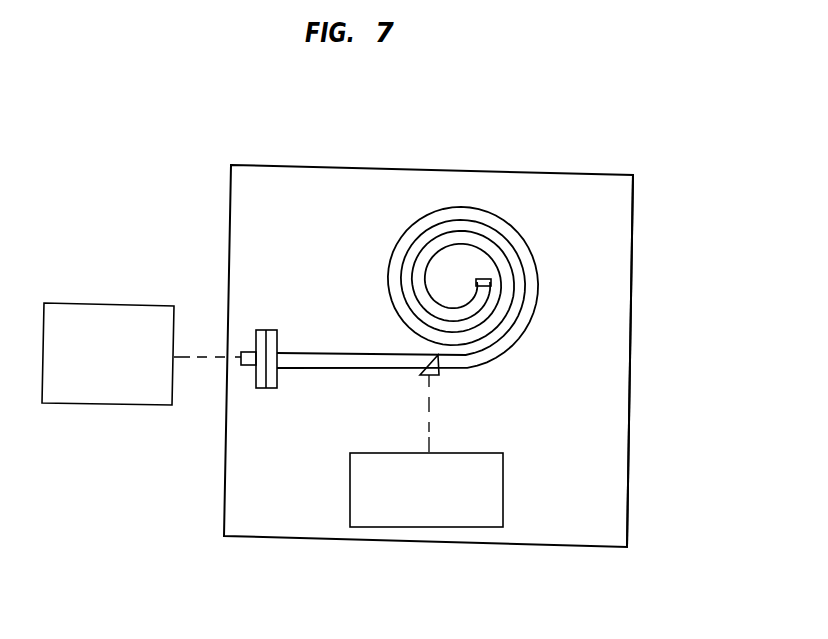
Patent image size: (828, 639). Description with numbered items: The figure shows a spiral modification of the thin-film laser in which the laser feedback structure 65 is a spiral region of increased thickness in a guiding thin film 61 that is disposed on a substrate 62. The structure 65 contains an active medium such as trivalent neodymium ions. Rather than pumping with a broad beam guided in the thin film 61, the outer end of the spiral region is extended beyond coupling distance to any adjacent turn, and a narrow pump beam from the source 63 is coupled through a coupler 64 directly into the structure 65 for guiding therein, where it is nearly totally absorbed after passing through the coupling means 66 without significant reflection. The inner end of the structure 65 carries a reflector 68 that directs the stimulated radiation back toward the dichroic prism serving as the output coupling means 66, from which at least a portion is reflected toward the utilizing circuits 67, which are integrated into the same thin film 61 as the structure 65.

The guiding thin film 61 is at (613, 237).
The substrate 62 is at (633, 293).
The pump beam source 63 is at (147, 303).
The input coupler 64 is at (268, 330).
The laser feedback structure 65 is at (399, 247).
The output coupling means 66 is at (437, 370).
The utilizing circuits 67 is at (485, 453).
The reflector 68 is at (482, 280).